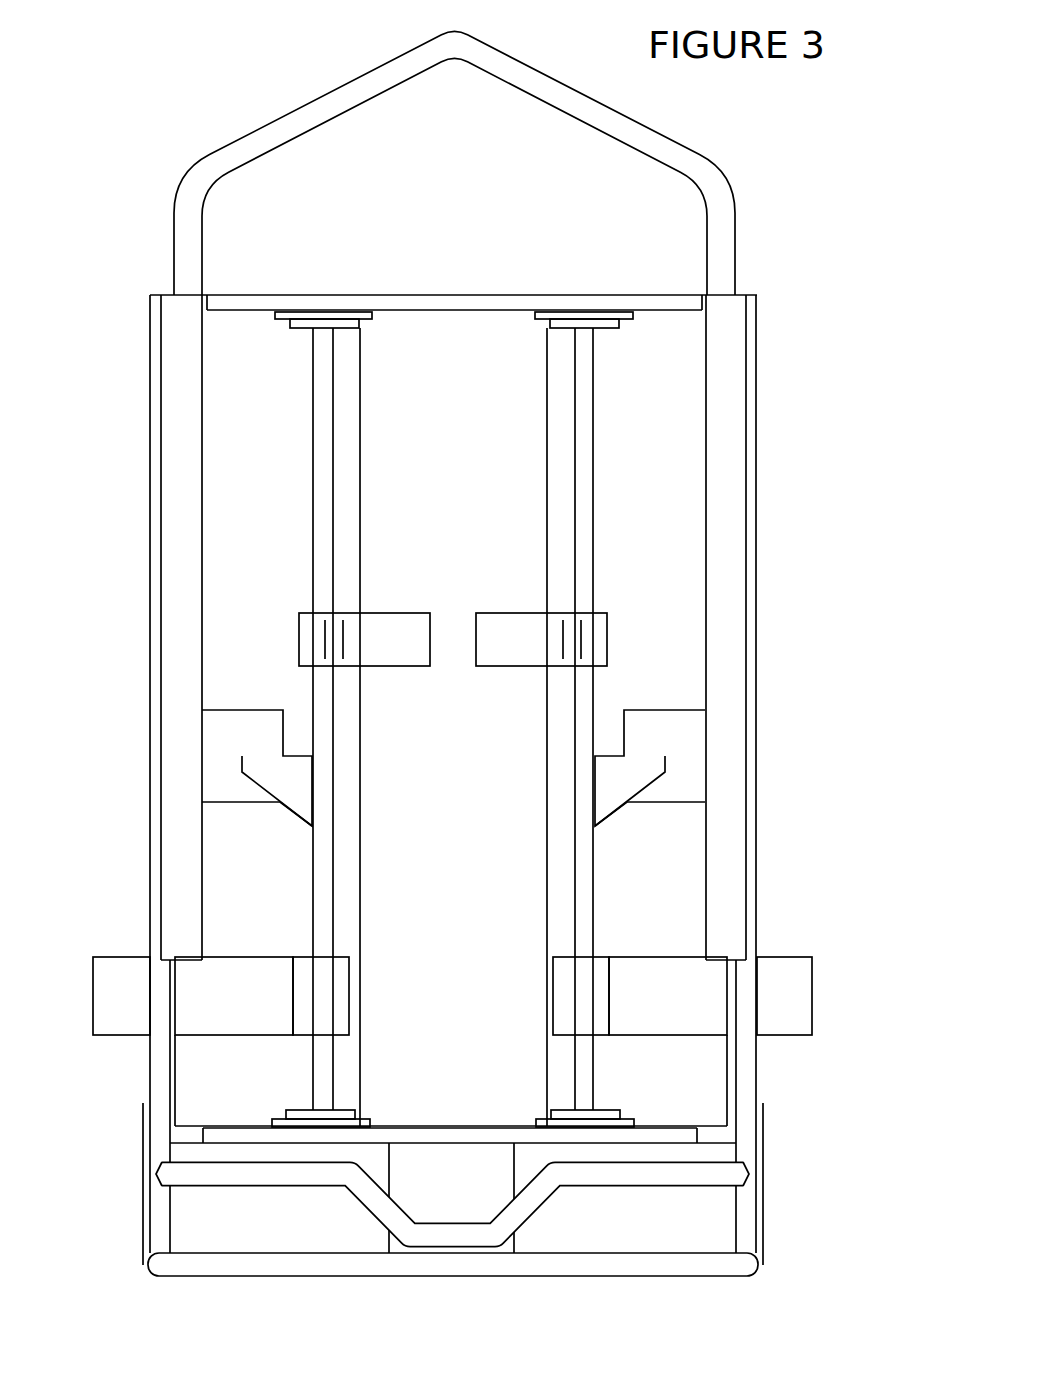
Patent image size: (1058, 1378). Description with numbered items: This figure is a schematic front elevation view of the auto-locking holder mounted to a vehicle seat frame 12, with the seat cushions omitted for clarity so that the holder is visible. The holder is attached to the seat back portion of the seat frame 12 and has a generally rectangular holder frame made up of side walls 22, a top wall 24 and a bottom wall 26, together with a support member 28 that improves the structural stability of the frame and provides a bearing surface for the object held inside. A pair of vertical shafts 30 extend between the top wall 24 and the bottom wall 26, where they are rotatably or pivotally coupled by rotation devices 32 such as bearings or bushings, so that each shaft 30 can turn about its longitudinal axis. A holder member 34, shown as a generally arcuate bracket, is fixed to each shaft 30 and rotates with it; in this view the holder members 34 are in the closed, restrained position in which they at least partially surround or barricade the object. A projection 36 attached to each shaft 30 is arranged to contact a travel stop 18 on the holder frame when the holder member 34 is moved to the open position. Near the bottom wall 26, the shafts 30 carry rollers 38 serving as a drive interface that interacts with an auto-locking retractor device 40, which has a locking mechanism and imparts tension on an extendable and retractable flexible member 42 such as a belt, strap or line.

The vehicle seat frame 12 is at (718, 201).
The travel stop 18 is at (237, 727).
The side walls 22 is at (138, 579).
The top wall 24 is at (537, 288).
The bottom wall 26 is at (421, 1121).
The support member 28 is at (453, 350).
The shafts 30 is at (322, 433).
The rotation devices 32 is at (303, 330).
The holder member 34 is at (412, 626).
The projection 36 is at (295, 792).
The rollers 38 is at (338, 996).
The auto-locking retractor device 40 is at (98, 995).
The flexible member 42 is at (264, 978).